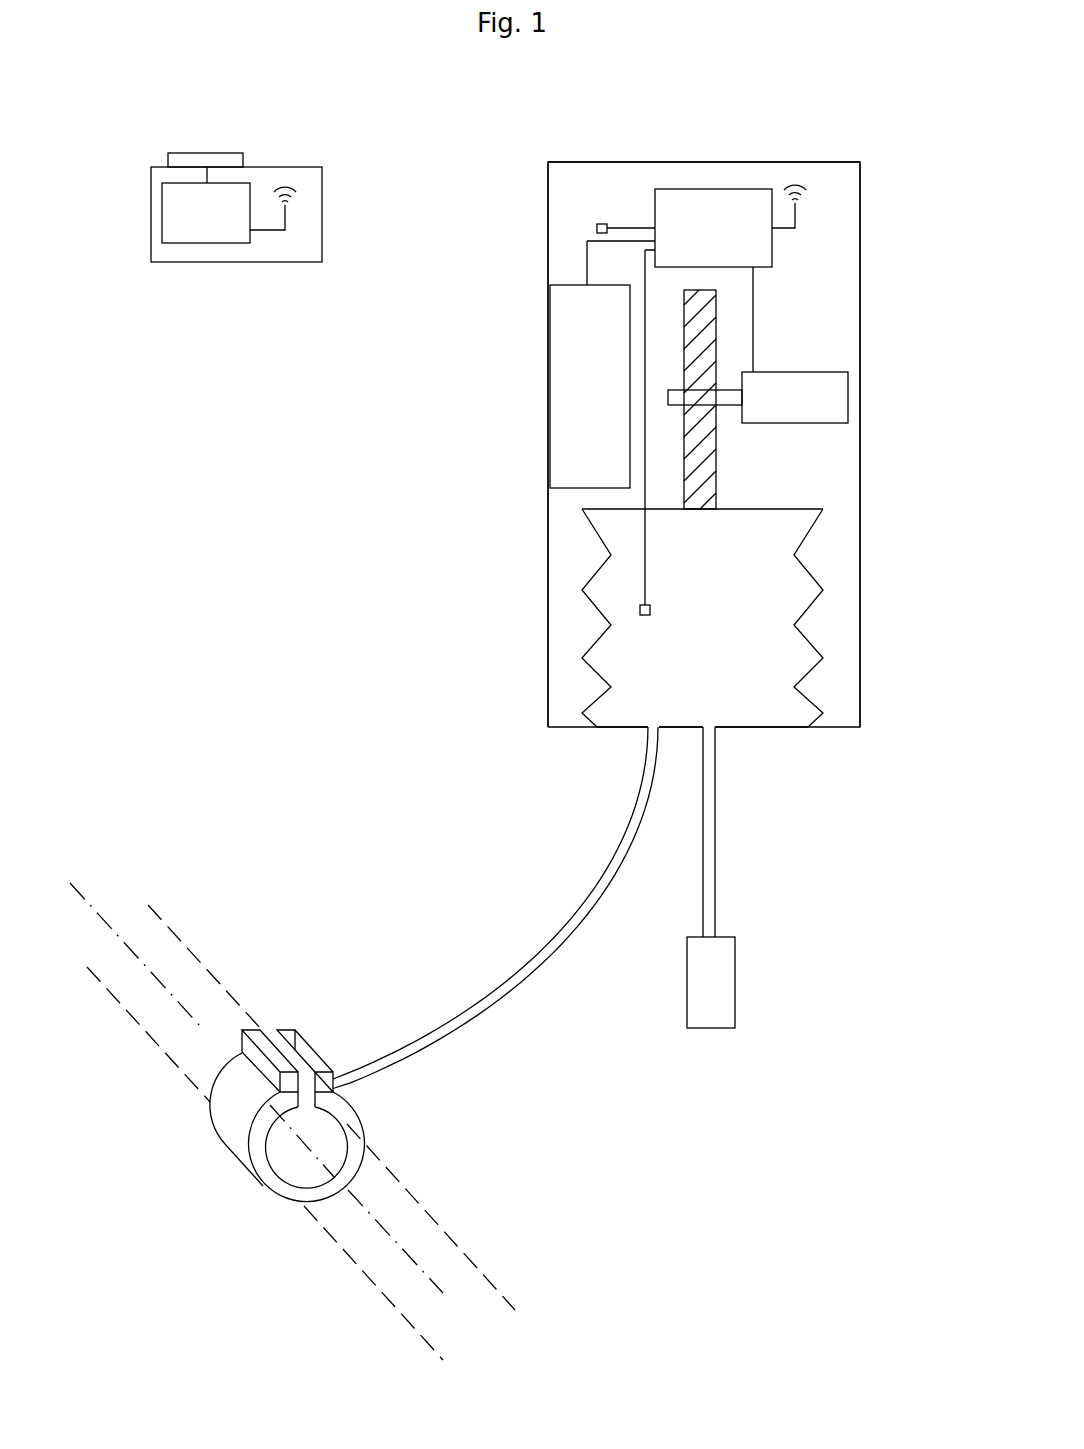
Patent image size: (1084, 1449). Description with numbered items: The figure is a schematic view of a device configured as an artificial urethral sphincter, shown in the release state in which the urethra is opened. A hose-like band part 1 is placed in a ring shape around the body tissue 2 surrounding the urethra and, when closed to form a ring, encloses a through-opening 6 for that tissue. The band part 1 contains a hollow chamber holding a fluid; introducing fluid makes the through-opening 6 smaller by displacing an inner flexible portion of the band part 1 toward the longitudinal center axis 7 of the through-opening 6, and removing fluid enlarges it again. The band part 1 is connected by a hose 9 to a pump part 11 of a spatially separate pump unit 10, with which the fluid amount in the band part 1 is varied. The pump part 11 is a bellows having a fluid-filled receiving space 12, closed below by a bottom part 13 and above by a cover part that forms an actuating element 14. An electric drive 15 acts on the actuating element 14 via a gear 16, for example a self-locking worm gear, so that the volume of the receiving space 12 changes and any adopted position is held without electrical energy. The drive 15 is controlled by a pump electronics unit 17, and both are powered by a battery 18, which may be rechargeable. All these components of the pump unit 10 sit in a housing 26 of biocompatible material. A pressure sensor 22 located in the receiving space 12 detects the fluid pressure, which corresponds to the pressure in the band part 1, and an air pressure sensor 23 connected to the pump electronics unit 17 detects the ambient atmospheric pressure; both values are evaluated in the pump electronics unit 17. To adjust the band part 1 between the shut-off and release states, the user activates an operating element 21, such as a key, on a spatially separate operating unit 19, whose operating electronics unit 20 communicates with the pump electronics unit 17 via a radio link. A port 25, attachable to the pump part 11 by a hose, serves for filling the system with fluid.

The band part 1 is at (219, 1176).
The body tissue 2 is at (460, 1251).
The through-opening 6 is at (302, 1152).
The longitudinal center axis 7 is at (167, 992).
The hose 9 is at (510, 987).
The pump unit 10 is at (522, 557).
The pump part 11 is at (827, 627).
The receiving space 12 is at (760, 702).
The bottom part 13 is at (617, 727).
The actuating element 14 is at (780, 507).
The electric drive 15 is at (823, 393).
The gear 16 is at (714, 391).
The pump electronics unit 17 is at (735, 209).
The battery 18 is at (573, 344).
The operating unit 19 is at (314, 146).
The operating electronics unit 20 is at (205, 223).
The operating element 21 is at (198, 160).
The pressure sensor 22 is at (640, 610).
The air pressure sensor 23 is at (600, 224).
The port 25 is at (710, 983).
The housing 26 is at (547, 232).